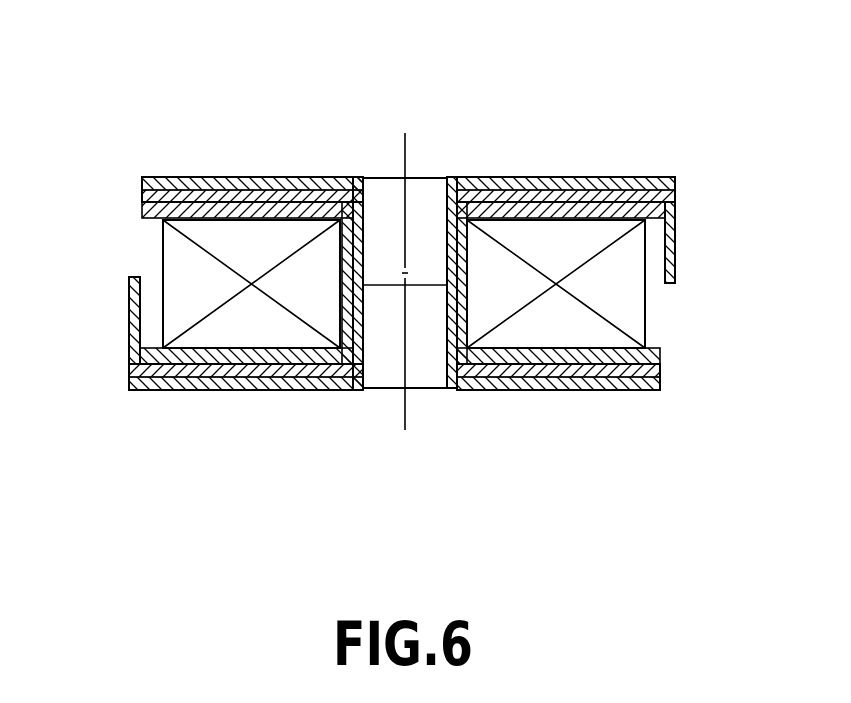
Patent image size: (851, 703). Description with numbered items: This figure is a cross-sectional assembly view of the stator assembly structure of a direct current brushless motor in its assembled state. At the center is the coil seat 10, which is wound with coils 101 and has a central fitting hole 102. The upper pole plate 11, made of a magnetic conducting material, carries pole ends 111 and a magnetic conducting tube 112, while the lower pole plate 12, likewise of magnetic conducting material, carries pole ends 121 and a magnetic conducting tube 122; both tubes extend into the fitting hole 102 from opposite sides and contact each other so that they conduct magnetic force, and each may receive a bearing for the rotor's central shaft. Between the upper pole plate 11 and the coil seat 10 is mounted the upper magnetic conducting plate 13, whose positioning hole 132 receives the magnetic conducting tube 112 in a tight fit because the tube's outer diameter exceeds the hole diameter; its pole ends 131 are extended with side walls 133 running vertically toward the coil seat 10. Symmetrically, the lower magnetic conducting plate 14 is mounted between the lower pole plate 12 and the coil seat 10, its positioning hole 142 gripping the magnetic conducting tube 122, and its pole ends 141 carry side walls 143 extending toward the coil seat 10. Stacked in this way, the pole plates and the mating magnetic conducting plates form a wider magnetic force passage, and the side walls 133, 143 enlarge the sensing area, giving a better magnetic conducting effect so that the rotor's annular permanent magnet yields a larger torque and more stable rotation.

The coil seat 10 is at (146, 192).
The upper pole plate 11 is at (297, 177).
The upper magnetic conducting plate 13 is at (215, 178).
The magnetic conducting tube 112 is at (371, 178).
The positioning hole 132 is at (462, 190).
The fitting hole 102 is at (490, 236).
The pole ends 111 is at (672, 177).
The pole ends 131 is at (673, 190).
The side walls 133 is at (675, 263).
The coils 101 is at (640, 297).
The side walls 143 is at (132, 325).
The pole ends 141 is at (132, 363).
The pole ends 121 is at (128, 392).
The positioning hole 142 is at (340, 360).
The magnetic conducting tube 122 is at (363, 343).
The lower pole plate 12 is at (527, 390).
The lower magnetic conducting plate 14 is at (603, 390).